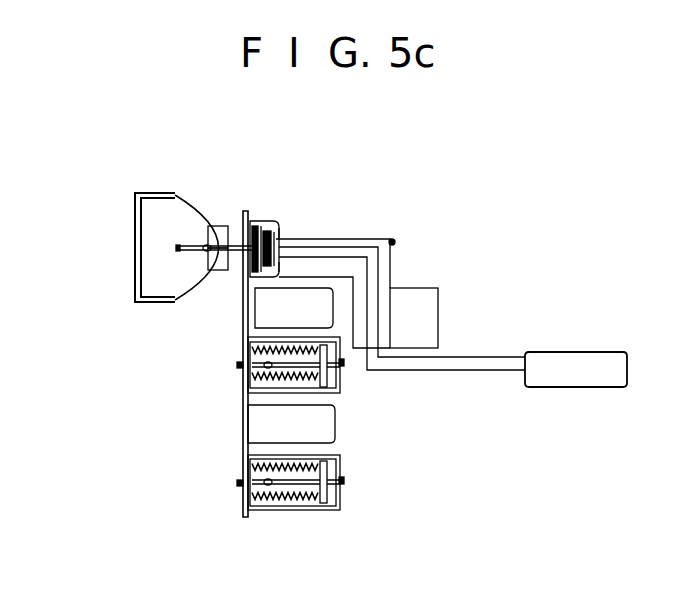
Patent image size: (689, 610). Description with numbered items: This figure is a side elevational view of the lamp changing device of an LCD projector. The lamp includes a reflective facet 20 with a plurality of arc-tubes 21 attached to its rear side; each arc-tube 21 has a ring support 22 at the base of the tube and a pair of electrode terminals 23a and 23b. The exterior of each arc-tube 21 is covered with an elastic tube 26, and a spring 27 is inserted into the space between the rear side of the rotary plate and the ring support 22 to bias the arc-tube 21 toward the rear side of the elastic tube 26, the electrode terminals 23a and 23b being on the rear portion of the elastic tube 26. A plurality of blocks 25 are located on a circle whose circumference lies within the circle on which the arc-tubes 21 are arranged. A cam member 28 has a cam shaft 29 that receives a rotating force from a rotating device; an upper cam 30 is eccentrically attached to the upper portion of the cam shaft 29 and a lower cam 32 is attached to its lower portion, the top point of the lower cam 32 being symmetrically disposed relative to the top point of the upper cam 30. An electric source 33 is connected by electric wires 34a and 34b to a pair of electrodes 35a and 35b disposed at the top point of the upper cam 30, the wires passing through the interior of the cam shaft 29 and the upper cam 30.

The reflective facet 20 is at (137, 227).
The arc-tube 21 is at (180, 250).
The ring support 22 is at (262, 220).
The electrode terminal 23a is at (283, 222).
The electrode terminal 23b is at (262, 276).
The block 25 is at (317, 290).
The elastic tube 26 is at (247, 212).
The spring 27 is at (288, 502).
The cam member 28 is at (394, 240).
The cam shaft 29 is at (395, 282).
The upper cam 30 is at (300, 240).
The lower cam 32 is at (428, 318).
The electric source 33 is at (597, 358).
The electric wire 34a is at (468, 357).
The electric wire 34b is at (470, 372).
The electrode 35a is at (275, 280).
The electrode 35b is at (281, 270).